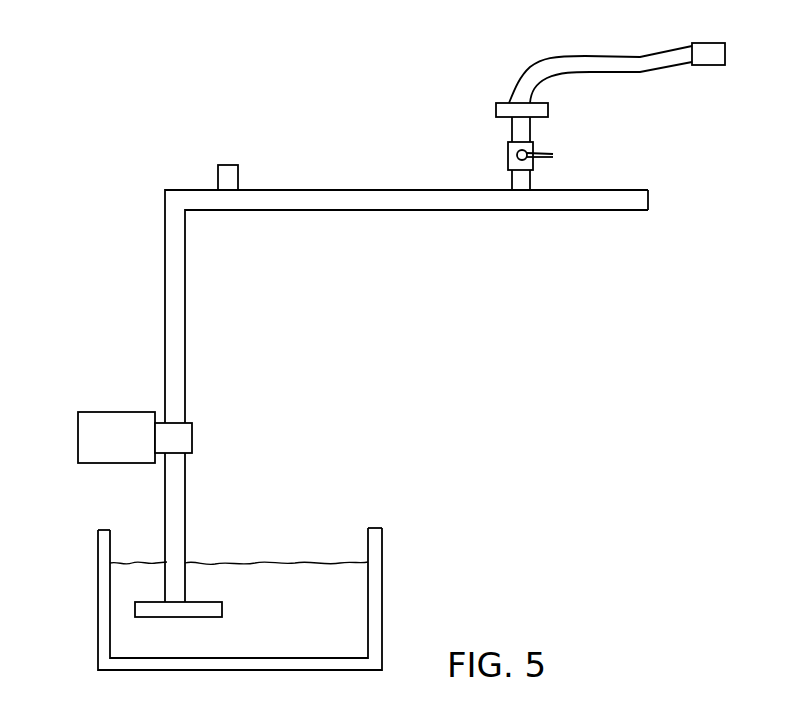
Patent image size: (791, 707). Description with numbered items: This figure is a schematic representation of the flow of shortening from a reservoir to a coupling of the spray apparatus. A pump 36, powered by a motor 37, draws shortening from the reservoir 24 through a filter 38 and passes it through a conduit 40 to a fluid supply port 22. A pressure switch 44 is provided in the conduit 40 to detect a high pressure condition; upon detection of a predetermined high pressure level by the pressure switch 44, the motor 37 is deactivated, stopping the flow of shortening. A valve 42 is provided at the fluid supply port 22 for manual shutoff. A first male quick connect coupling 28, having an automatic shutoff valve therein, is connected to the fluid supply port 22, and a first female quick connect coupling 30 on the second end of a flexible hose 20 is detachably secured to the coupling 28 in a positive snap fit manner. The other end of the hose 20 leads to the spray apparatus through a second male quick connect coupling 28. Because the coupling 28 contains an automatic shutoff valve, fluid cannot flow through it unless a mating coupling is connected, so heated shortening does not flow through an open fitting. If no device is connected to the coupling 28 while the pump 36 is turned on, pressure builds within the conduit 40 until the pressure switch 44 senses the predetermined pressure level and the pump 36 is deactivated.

The flexible conduit or hose 20 is at (575, 56).
The male quick connect coupling 28 is at (710, 67).
The female quick connect coupling 30 is at (503, 101).
The fluid supply port 22 is at (508, 138).
The valve 42 is at (528, 160).
The conduit 40 is at (363, 212).
The pressure switch 44 is at (239, 168).
The motor 37 is at (77, 433).
The pump 36 is at (193, 440).
The reservoir of shortening 24 is at (118, 625).
The filter 38 is at (223, 609).